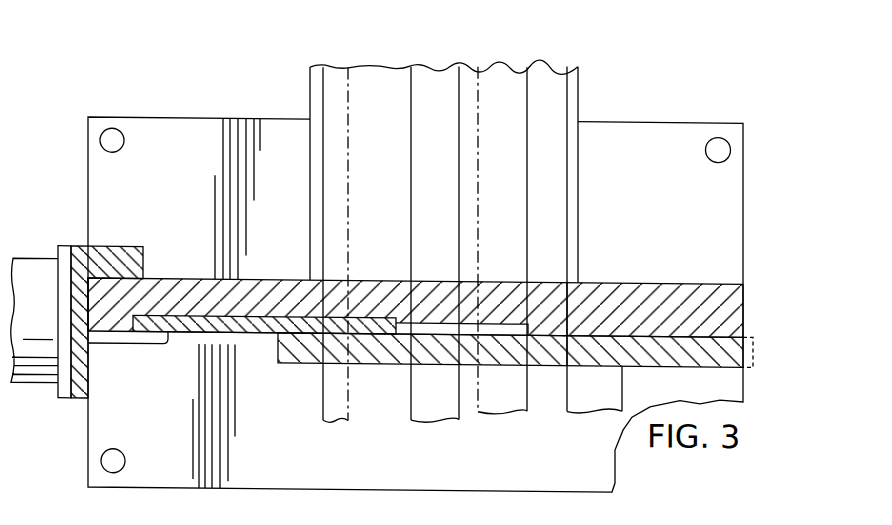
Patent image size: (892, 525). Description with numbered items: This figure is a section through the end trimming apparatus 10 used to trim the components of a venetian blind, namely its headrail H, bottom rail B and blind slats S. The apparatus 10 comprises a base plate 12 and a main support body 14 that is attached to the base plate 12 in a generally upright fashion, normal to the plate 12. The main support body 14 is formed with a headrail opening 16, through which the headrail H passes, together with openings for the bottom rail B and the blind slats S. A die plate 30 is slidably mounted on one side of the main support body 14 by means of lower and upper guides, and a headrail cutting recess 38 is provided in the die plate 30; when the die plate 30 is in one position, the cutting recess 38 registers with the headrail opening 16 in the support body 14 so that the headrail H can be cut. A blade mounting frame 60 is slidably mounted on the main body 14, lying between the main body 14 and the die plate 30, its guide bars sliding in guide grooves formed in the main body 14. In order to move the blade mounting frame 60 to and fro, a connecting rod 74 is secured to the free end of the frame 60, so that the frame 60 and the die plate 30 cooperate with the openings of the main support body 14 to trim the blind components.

The end trimming apparatus 10 is at (223, 81).
The base plate 12 is at (642, 142).
The main support body 14 is at (377, 287).
The headrail opening 16 is at (567, 328).
The die plate 30 is at (380, 352).
The headrail cutting recess 38 is at (567, 333).
The blade mounting frame 60 is at (248, 326).
The connecting rod 74 is at (143, 342).
The bottom rail B is at (340, 84).
The blind slats S is at (490, 88).
The headrail H is at (543, 98).